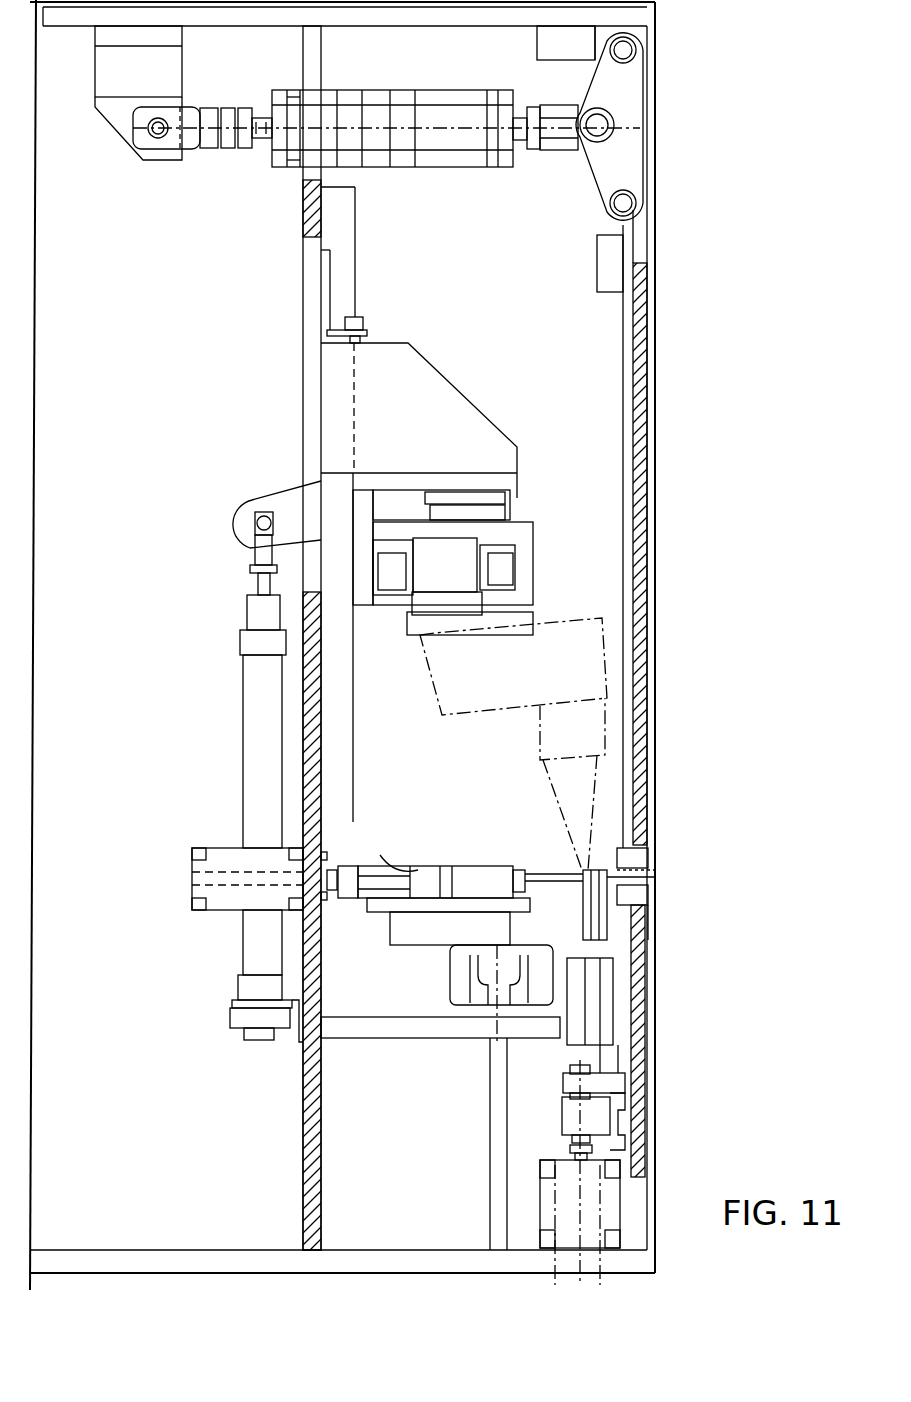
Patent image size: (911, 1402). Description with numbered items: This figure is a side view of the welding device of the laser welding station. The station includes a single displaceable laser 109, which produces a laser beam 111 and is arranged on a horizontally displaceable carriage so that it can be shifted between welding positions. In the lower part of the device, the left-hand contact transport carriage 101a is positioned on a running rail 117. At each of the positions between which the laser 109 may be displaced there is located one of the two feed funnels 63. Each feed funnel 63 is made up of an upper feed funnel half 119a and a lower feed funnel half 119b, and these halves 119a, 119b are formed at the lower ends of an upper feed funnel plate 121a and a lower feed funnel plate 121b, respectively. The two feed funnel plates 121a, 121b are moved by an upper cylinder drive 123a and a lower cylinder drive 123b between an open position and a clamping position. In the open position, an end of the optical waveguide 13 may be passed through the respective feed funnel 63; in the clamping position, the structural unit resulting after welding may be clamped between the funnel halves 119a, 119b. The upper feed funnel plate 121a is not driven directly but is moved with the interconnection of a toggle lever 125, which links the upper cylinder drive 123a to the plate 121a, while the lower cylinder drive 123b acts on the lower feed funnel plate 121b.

The upper cylinder drive 123a is at (482, 90).
The toggle lever 125 is at (600, 170).
The upper feed funnel plate 121a is at (643, 496).
The laser 109 is at (550, 735).
The laser beam 111 is at (565, 795).
The upper feed funnel half 119a is at (640, 860).
The feed funnel 63 is at (655, 877).
The optical waveguide 13 is at (655, 882).
The lower feed funnel half 119b is at (645, 902).
The left-hand contact transport carriage 101a is at (455, 970).
The running rail 117 is at (493, 1005).
The lower feed funnel plate 121b is at (640, 1028).
The lower cylinder drive 123b is at (545, 1198).